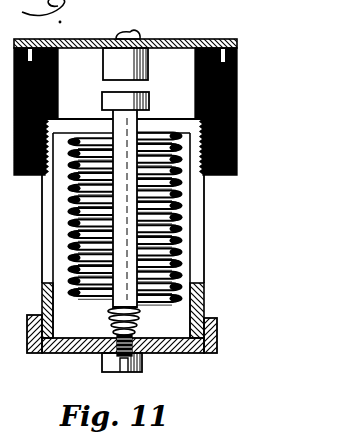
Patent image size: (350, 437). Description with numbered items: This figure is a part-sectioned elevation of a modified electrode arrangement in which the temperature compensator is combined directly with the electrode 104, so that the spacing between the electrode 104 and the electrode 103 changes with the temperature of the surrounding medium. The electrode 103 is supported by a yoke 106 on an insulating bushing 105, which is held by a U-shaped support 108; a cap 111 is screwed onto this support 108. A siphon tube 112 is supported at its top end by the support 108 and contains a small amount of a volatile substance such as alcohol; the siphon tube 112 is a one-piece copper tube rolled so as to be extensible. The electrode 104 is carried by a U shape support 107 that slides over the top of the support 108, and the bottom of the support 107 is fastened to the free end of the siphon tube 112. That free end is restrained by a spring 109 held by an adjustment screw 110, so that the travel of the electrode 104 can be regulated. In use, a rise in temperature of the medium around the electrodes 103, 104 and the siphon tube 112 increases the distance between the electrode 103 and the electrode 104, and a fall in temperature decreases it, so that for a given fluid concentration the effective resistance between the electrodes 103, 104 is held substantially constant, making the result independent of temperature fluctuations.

The electrode 103 is at (148, 62).
The electrode 104 is at (102, 99).
The insulating bushing 105 is at (237, 88).
The yoke 106 is at (180, 37).
The U shape support 107 is at (143, 113).
The U-shaped support 108 is at (202, 229).
The spring 109 is at (136, 322).
The adjustment screw 110 is at (143, 368).
The cap 111 is at (216, 328).
The siphon tube 112 is at (180, 249).